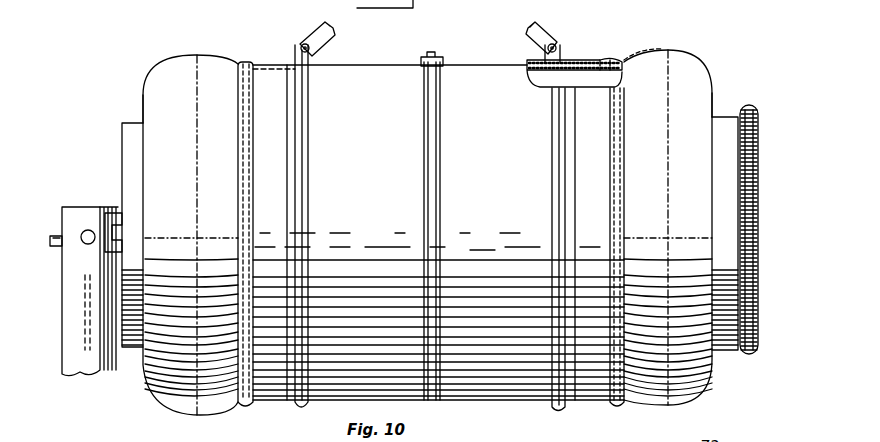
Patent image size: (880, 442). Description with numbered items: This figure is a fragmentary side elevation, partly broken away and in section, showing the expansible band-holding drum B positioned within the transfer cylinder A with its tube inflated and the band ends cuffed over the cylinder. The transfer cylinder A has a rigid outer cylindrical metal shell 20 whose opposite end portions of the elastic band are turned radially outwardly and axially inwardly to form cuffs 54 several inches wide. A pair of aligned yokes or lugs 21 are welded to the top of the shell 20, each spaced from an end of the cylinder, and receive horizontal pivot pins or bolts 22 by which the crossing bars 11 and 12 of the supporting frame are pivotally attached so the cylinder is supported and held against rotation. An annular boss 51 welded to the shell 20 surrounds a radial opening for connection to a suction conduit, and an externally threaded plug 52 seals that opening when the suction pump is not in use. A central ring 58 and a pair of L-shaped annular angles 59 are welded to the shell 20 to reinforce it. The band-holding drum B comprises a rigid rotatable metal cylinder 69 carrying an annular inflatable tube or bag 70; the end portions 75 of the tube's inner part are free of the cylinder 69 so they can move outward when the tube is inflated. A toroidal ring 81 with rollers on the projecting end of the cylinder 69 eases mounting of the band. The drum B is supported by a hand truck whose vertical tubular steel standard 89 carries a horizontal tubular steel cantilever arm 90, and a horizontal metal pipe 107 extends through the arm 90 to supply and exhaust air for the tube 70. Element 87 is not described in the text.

The crossing bar 11 is at (312, 30).
The crossing bar 12 is at (530, 36).
The outer cylindrical metal shell 20 is at (500, 400).
The yoke or lug 21 is at (312, 62).
The pivot pin or bolt 22 is at (299, 47).
The annular boss 51 is at (424, 62).
The externally threaded plug 52 is at (441, 60).
The cuff 54 is at (264, 406).
The central ring 58 is at (454, 158).
The annular angle 59 is at (308, 190).
The rigid rotatable metal cylinder 69 is at (128, 122).
The annular inflatable tube or bag 70 is at (163, 402).
The end portion of inner part of tube 75 is at (143, 105).
The toroidal ring 81 is at (757, 180).
The bolt 87 is at (83, 231).
The vertical tubular steel standard 89 is at (63, 325).
The horizontal tubular steel cantilever arm 90 is at (114, 213).
The horizontal metal pipe 107 is at (56, 247).
The transfer cylinder A is at (583, 46).
The expansible band-holding drum B is at (107, 142).